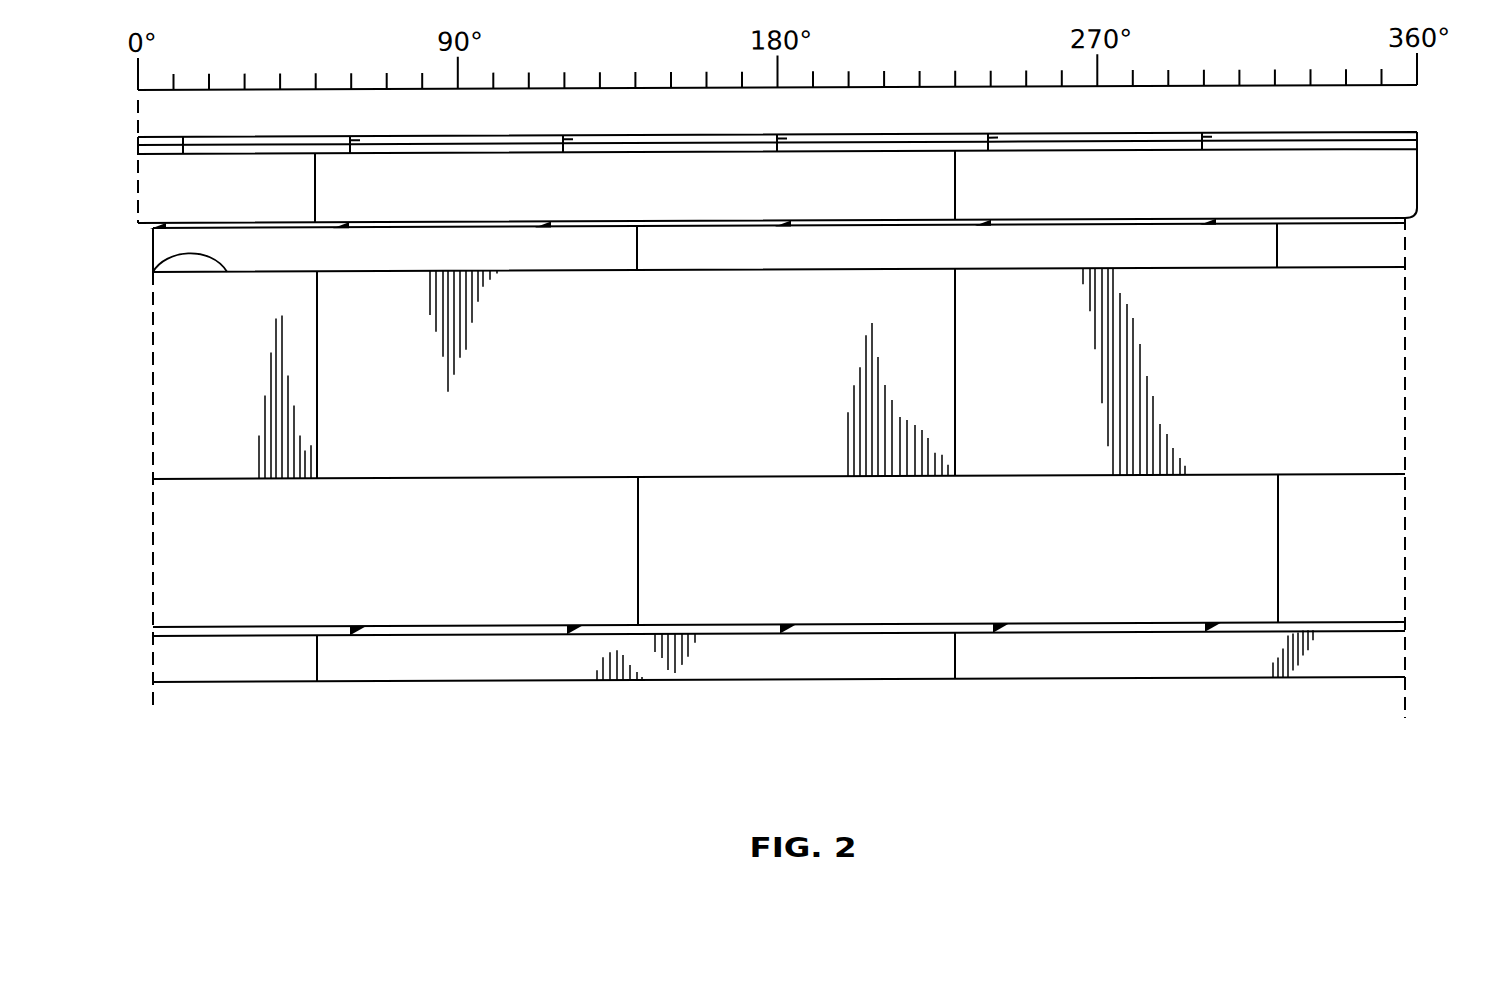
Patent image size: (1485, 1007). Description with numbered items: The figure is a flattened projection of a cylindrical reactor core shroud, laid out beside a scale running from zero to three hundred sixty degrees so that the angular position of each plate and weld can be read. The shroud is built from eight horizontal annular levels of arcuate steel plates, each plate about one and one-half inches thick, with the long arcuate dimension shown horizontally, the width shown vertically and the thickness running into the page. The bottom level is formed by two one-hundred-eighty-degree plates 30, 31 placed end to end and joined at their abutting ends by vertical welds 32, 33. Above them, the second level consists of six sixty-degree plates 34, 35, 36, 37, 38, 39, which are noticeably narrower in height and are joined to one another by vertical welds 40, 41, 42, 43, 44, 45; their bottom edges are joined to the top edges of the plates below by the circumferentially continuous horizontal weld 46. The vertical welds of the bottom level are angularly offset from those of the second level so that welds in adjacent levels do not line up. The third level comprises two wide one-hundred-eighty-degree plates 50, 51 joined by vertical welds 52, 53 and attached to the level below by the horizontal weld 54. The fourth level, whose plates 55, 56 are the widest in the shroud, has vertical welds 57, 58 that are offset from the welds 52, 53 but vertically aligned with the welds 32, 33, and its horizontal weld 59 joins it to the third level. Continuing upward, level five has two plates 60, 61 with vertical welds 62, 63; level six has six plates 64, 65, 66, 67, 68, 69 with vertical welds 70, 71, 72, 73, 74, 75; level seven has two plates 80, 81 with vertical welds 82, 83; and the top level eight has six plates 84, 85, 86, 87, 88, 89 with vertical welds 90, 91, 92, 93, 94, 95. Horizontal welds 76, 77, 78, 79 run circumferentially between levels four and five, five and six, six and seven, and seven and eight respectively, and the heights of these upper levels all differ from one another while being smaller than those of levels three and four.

The plate 30 is at (442, 668).
The plate 31 is at (232, 668).
The vertical weld 32 is at (322, 660).
The vertical weld 33 is at (955, 665).
The plate 34 is at (265, 630).
The plate 35 is at (437, 630).
The plate 36 is at (686, 631).
The plate 37 is at (890, 630).
The plate 38 is at (1068, 631).
The plate 39 is at (1340, 630).
The vertical weld 40 is at (153, 632).
The vertical weld 41 is at (352, 630).
The vertical weld 42 is at (574, 629).
The vertical weld 43 is at (783, 631).
The vertical weld 44 is at (991, 630).
The vertical weld 45 is at (1207, 630).
The horizontal weld 46 is at (845, 637).
The plate 50 is at (170, 530).
The plate 51 is at (778, 538).
The vertical weld 52 is at (638, 507).
The vertical weld 53 is at (1278, 503).
The horizontal weld 54 is at (182, 628).
The plate 55 is at (172, 398).
The plate 56 is at (607, 415).
The vertical weld 57 is at (318, 385).
The vertical weld 58 is at (955, 397).
The horizontal weld 59 is at (462, 480).
The plate 60 is at (436, 266).
The plate 61 is at (818, 268).
The vertical weld 62 is at (640, 240).
The vertical weld 63 is at (1275, 250).
The plate 64 is at (242, 223).
The plate 65 is at (447, 226).
The plate 66 is at (690, 222).
The plate 67 is at (863, 222).
The plate 68 is at (1097, 221).
The plate 69 is at (1255, 222).
The vertical weld 70 is at (153, 227).
The vertical weld 71 is at (342, 236).
The vertical weld 72 is at (530, 234).
The vertical weld 73 is at (783, 222).
The vertical weld 74 is at (985, 221).
The vertical weld 75 is at (1210, 222).
The horizontal weld 76 is at (153, 270).
The horizontal weld 77 is at (273, 237).
The horizontal weld 78 is at (185, 223).
The horizontal weld 79 is at (183, 153).
The plate 80 is at (598, 202).
The plate 81 is at (1048, 201).
The vertical weld 82 is at (318, 190).
The vertical weld 83 is at (957, 167).
The plate 84 is at (252, 147).
The plate 85 is at (463, 147).
The plate 86 is at (690, 147).
The plate 87 is at (890, 147).
The plate 88 is at (1097, 147).
The plate 89 is at (1312, 147).
The vertical weld 90 is at (138, 145).
The vertical weld 91 is at (355, 150).
The vertical weld 92 is at (573, 149).
The vertical weld 93 is at (780, 147).
The vertical weld 94 is at (995, 147).
The vertical weld 95 is at (1205, 147).